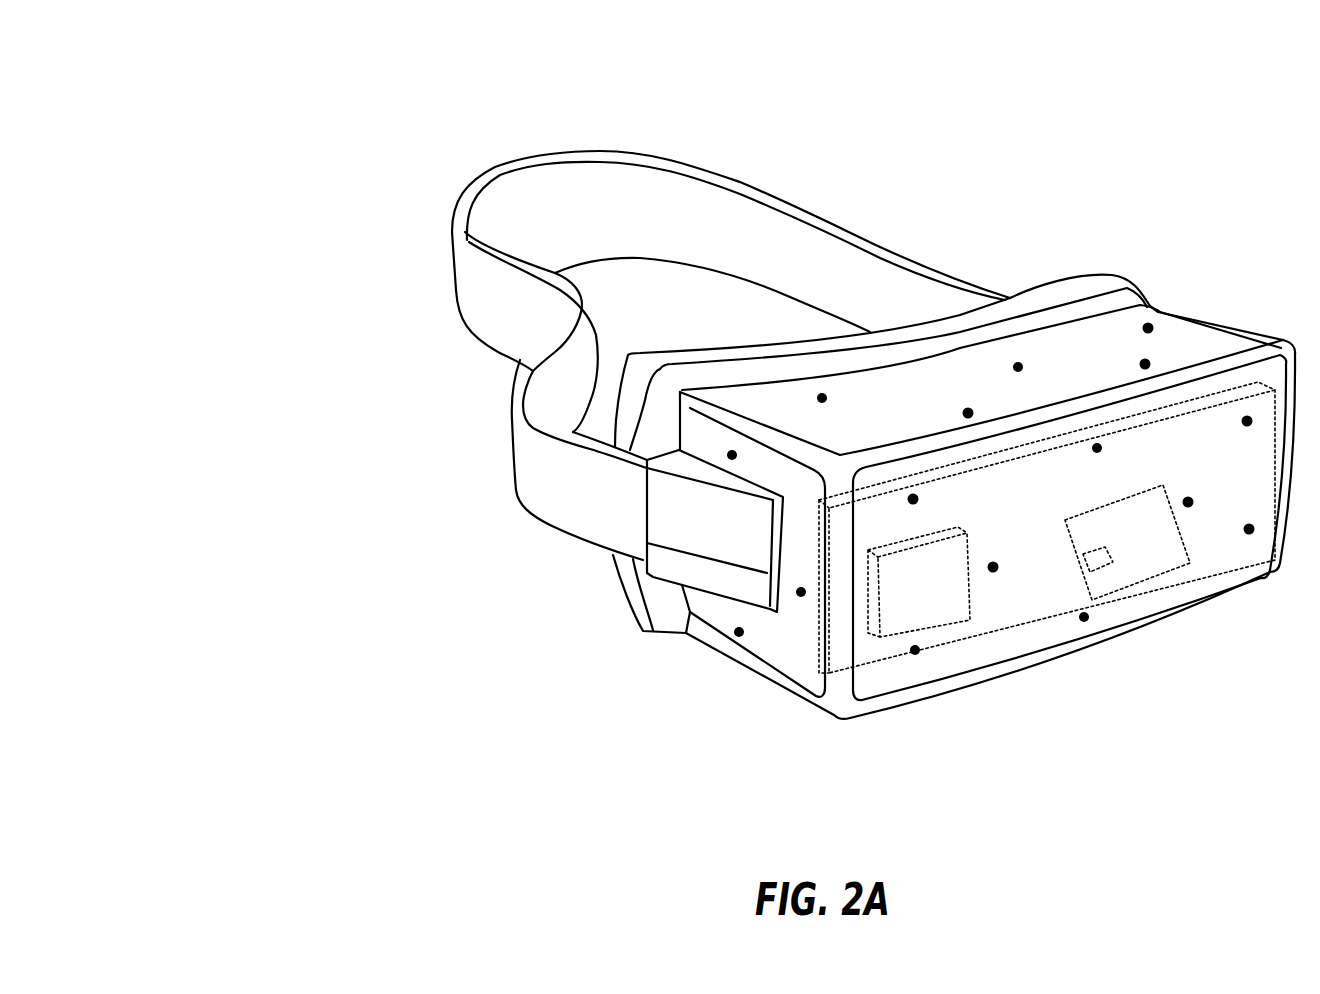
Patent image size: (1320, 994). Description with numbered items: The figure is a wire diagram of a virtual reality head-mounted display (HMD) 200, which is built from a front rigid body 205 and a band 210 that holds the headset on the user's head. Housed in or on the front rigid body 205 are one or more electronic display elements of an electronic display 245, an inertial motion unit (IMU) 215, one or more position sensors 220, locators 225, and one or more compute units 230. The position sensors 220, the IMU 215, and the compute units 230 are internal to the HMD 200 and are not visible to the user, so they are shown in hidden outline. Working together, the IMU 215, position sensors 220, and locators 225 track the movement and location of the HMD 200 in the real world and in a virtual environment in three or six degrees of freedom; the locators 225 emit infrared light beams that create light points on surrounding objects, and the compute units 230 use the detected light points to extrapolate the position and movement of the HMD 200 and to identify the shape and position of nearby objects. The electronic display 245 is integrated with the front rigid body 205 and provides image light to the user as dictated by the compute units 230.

The virtual reality head-mounted display (HMD) 200 is at (322, 128).
The front rigid body 205 is at (852, 722).
The band 210 is at (457, 294).
The inertial motion unit (IMU) 215 is at (1063, 522).
The position sensors 220 is at (1085, 562).
The locators 225 is at (962, 417).
The compute units 230 is at (926, 537).
The electronic display 245 is at (1274, 475).